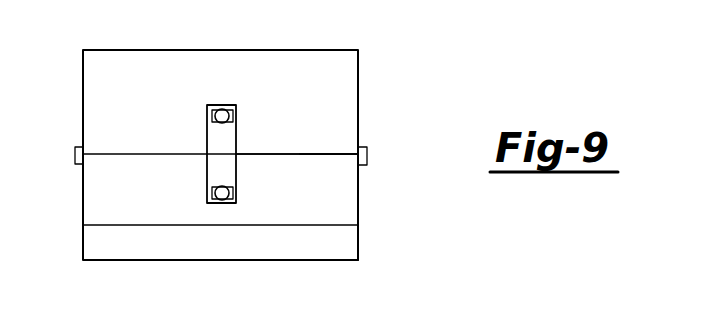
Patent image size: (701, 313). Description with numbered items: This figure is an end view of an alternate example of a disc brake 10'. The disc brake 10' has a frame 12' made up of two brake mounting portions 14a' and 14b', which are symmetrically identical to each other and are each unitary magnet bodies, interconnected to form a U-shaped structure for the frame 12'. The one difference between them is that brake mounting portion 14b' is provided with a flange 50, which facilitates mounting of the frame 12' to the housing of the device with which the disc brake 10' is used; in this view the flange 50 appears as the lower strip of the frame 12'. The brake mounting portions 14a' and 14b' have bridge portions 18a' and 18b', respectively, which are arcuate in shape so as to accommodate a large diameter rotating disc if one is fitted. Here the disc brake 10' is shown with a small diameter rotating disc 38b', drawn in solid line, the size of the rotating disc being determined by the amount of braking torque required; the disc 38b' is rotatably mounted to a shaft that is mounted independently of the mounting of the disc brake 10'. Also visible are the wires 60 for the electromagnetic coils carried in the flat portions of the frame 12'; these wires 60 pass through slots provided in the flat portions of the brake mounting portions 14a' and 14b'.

The disc brake 10' is at (272, 138).
The frame 12' is at (402, 230).
The brake mounting portion 14a' is at (220, 126).
The brake mounting portion 14b' is at (207, 181).
The bridge portion 18a' is at (338, 127).
The bridge portion 18b' is at (383, 178).
The small diameter rotating disc 38b' is at (414, 151).
The flange 50 is at (215, 251).
The wires 60 is at (227, 110).